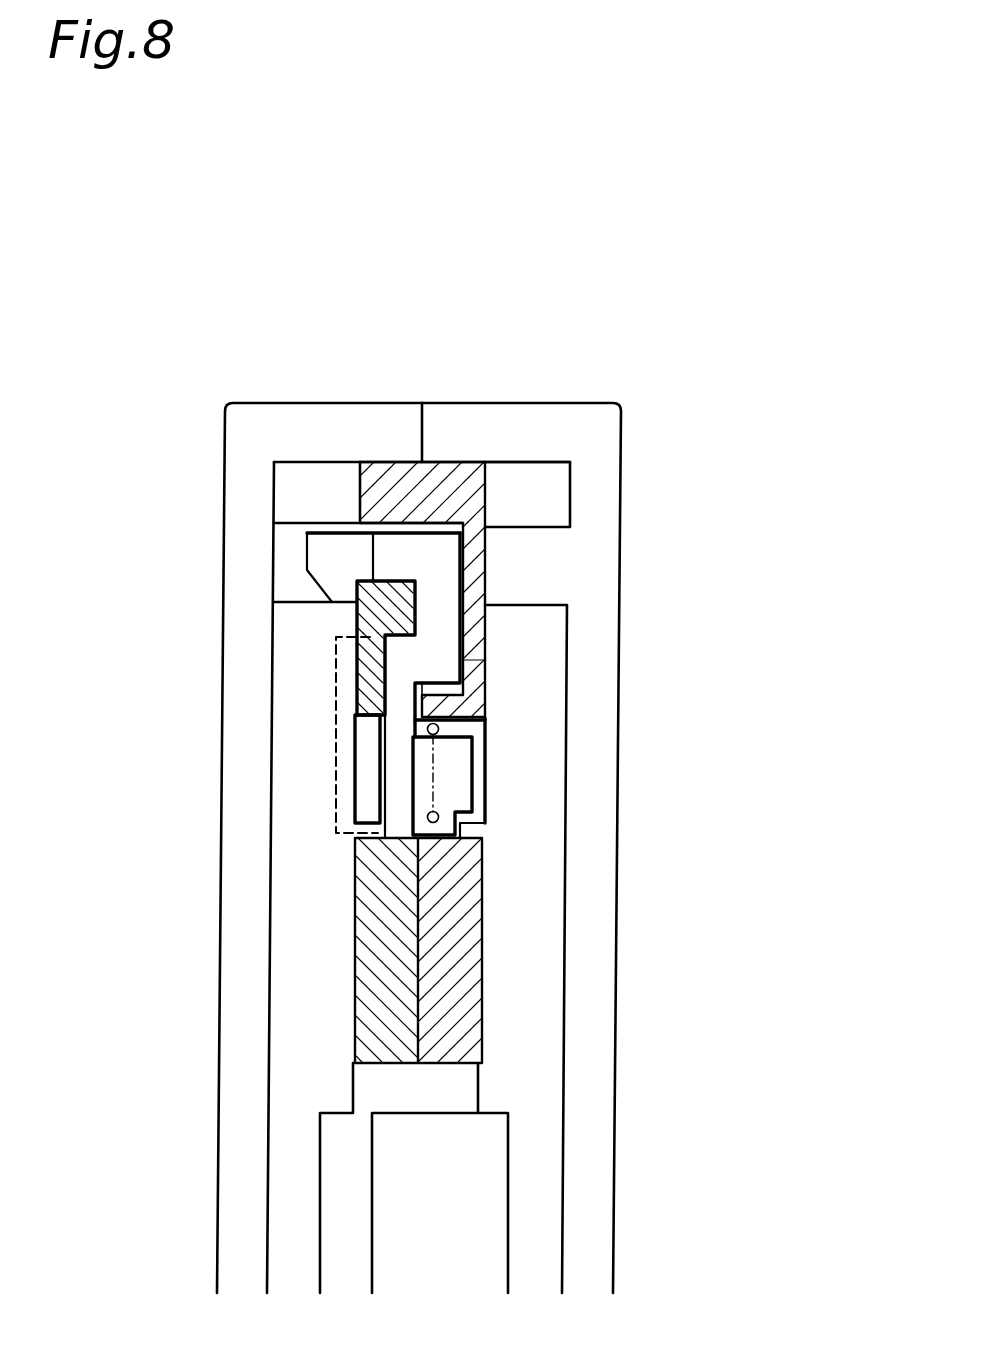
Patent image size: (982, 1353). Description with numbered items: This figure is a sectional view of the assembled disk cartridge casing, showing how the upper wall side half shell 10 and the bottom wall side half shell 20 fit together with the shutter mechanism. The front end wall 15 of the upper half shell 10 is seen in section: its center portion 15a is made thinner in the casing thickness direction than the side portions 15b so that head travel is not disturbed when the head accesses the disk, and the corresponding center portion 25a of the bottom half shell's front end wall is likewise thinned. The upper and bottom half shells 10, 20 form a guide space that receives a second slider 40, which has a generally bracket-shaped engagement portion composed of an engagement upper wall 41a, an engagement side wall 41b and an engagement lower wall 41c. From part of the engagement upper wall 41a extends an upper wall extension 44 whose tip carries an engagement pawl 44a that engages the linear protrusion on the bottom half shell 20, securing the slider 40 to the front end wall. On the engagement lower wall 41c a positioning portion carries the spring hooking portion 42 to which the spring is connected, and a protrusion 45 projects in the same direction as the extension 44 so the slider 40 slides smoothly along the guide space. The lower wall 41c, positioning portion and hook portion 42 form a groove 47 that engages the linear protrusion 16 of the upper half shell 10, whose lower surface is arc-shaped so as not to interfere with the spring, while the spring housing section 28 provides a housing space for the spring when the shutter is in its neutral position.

The upper wall side half shell 10 is at (606, 418).
The bottom wall side half shell 20 is at (250, 410).
The front end wall 15 is at (422, 479).
The center portion of the front end wall 15a is at (435, 465).
The other portions of the front end wall 15b is at (329, 475).
The upper wall extension 44 is at (247, 514).
The center portion of the front end wall 25a is at (377, 572).
The engagement pawl 44a is at (333, 585).
The second slider 40 is at (417, 649).
The engagement upper wall 41a is at (401, 552).
The engagement side wall 41b is at (440, 612).
The engagement lower wall 41c is at (415, 655).
The linear protrusion 16 is at (465, 663).
The spring hooking portion 42 is at (427, 795).
The spring housing section 28 is at (343, 748).
The protrusion 45 is at (330, 705).
The groove 47 is at (483, 738).